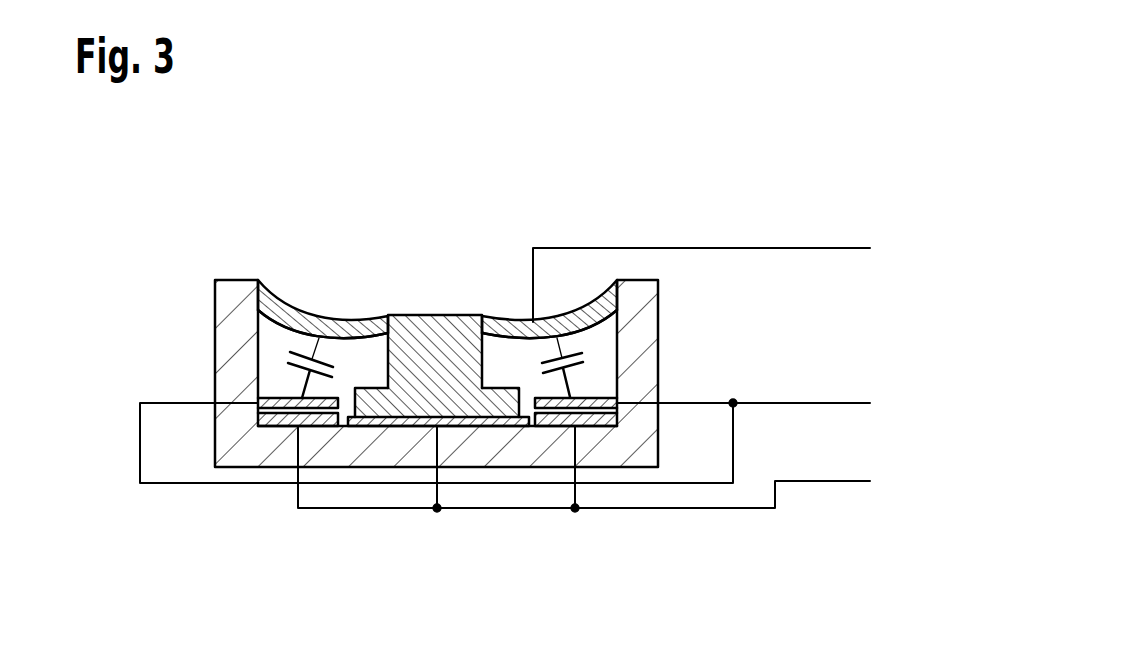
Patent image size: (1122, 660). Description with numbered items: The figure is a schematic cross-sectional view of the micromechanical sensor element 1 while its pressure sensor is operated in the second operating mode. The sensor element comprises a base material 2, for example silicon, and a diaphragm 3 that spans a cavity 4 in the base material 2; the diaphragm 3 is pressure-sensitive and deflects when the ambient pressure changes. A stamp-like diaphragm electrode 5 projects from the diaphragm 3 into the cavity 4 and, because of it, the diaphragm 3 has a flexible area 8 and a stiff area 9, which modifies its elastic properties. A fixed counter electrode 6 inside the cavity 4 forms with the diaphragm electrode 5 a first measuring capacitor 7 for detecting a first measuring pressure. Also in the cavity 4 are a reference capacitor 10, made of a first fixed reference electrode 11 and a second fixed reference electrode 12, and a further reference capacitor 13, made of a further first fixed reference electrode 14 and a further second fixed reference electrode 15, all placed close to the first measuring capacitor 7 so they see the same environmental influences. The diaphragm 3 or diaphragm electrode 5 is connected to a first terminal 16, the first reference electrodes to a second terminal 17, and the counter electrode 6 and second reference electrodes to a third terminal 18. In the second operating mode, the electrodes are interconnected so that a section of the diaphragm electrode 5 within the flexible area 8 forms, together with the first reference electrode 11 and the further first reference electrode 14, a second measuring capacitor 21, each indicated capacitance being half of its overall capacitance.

The micromechanical sensor element 1 is at (186, 193).
The base material 2 is at (643, 310).
The diaphragm 3 is at (280, 308).
The cavity 4 is at (365, 357).
The diaphragm electrode 5 is at (392, 419).
The counter electrode 6 is at (404, 414).
The first measuring capacitor 7 is at (429, 508).
The flexible area 8 is at (320, 327).
The stiff area 9 is at (407, 332).
The reference capacitor 10 is at (552, 513).
The first fixed reference electrode 11 is at (547, 419).
The second fixed reference electrode 12 is at (557, 413).
The further reference capacitor 13 is at (276, 513).
The further first fixed reference electrode 14 is at (278, 406).
The further second fixed reference electrode 15 is at (284, 419).
The first terminal 16 is at (843, 248).
The second terminal 17 is at (843, 403).
The third terminal 18 is at (843, 481).
The second measuring capacitor 21 is at (290, 361).